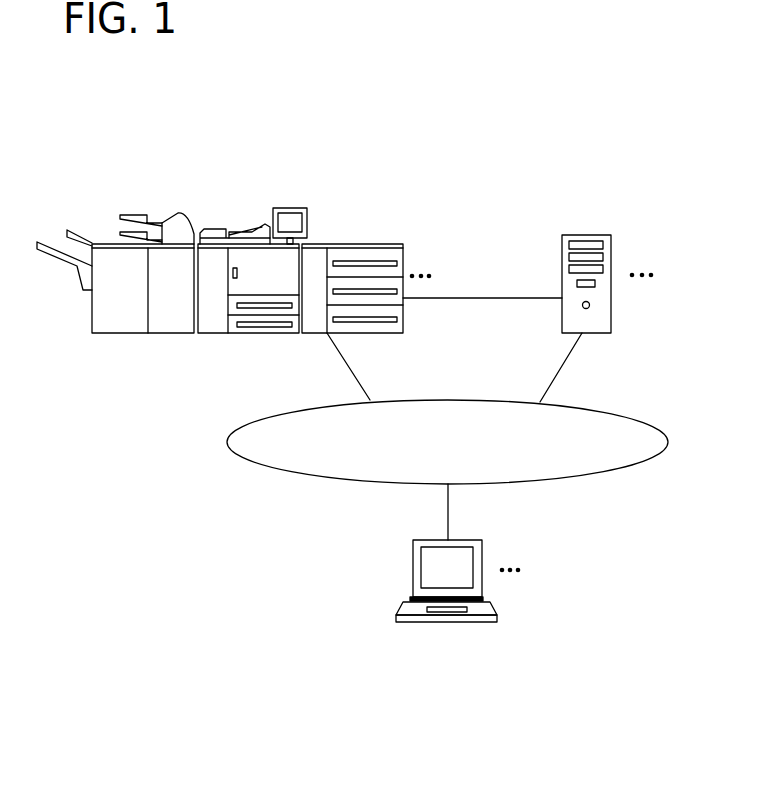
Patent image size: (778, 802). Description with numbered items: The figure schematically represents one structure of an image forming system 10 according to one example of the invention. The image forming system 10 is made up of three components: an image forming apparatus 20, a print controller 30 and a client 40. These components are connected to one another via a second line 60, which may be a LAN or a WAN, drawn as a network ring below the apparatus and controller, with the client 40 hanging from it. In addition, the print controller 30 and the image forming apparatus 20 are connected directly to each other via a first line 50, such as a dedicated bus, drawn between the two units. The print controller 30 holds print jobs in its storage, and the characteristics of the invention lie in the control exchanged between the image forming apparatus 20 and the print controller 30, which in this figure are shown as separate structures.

The image forming system 10 is at (611, 95).
The image forming apparatus 20 is at (350, 244).
The print controller 30 is at (585, 235).
The client 40 is at (440, 622).
The first line 50 is at (480, 298).
The second line 60 is at (347, 364).